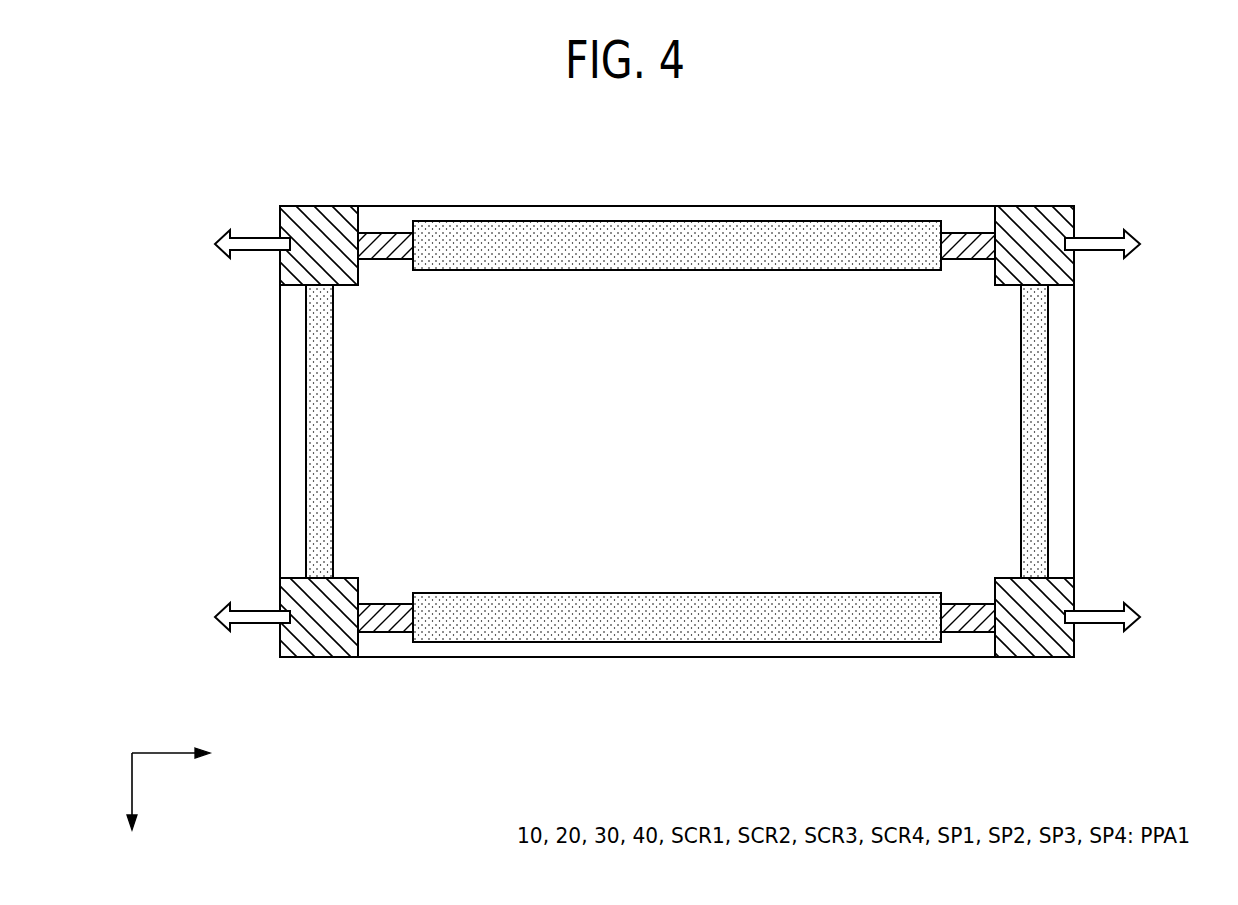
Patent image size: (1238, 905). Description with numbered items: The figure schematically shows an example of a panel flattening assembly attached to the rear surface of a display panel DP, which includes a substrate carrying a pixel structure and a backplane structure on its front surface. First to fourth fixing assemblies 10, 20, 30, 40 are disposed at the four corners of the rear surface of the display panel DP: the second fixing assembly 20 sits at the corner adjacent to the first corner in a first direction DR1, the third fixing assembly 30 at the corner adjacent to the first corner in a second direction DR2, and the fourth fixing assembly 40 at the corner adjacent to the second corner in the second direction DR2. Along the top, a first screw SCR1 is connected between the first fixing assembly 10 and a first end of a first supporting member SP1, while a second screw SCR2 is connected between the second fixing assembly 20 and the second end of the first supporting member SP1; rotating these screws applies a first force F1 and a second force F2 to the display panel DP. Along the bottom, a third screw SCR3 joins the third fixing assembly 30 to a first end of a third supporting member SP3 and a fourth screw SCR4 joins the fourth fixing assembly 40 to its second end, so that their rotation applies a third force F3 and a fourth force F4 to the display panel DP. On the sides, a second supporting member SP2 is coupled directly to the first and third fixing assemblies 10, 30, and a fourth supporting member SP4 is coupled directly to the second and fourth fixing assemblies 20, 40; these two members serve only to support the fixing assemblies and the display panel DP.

The first fixing assembly 10 is at (319, 212).
The second fixing assembly 20 is at (1037, 212).
The third fixing assembly 30 is at (320, 652).
The fourth fixing assembly 40 is at (1033, 652).
The first screw SCR1 is at (385, 245).
The second screw SCR2 is at (963, 245).
The third screw SCR3 is at (385, 620).
The fourth screw SCR4 is at (968, 620).
The first supporting member SP1 is at (688, 238).
The second supporting member SP2 is at (310, 441).
The third supporting member SP3 is at (703, 626).
The fourth supporting member SP4 is at (1043, 441).
The display panel DP is at (560, 212).
The first force F1 is at (241, 244).
The second force F2 is at (1115, 244).
The third force F3 is at (241, 617).
The fourth force F4 is at (1115, 617).
The first direction DR1 is at (191, 754).
The second direction DR2 is at (132, 808).